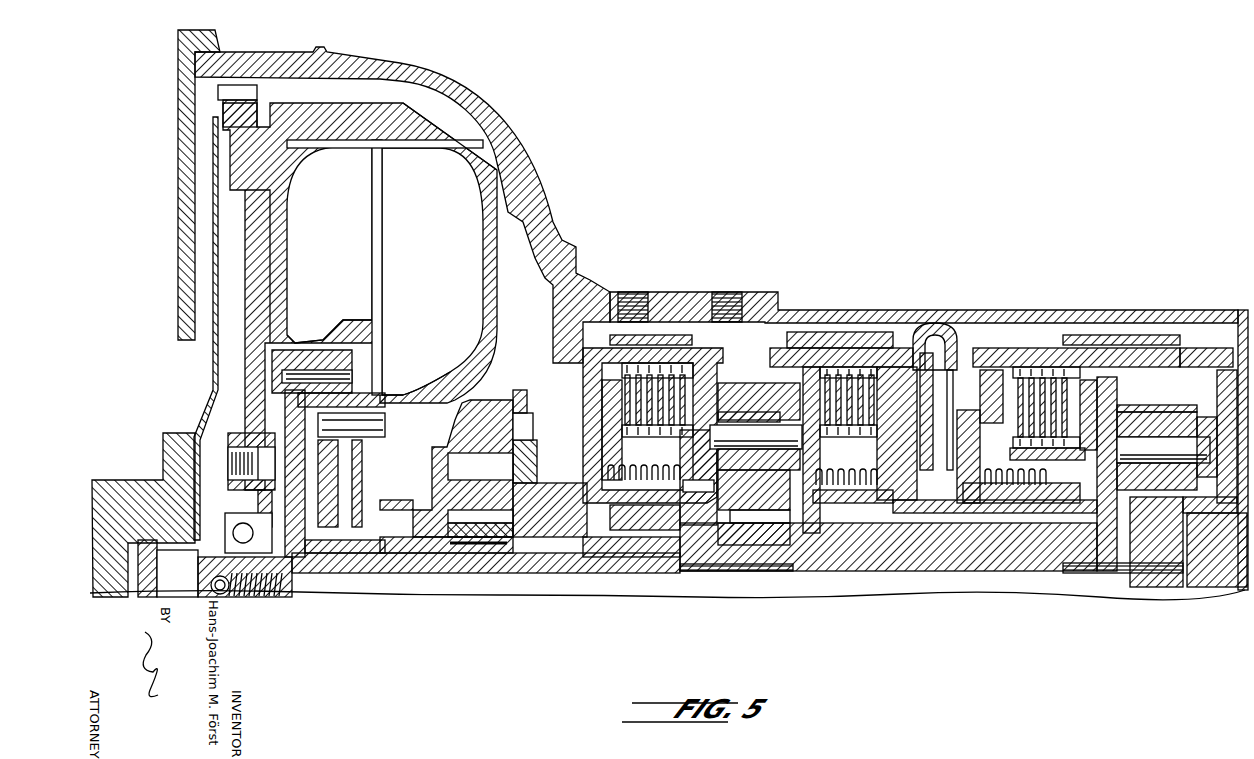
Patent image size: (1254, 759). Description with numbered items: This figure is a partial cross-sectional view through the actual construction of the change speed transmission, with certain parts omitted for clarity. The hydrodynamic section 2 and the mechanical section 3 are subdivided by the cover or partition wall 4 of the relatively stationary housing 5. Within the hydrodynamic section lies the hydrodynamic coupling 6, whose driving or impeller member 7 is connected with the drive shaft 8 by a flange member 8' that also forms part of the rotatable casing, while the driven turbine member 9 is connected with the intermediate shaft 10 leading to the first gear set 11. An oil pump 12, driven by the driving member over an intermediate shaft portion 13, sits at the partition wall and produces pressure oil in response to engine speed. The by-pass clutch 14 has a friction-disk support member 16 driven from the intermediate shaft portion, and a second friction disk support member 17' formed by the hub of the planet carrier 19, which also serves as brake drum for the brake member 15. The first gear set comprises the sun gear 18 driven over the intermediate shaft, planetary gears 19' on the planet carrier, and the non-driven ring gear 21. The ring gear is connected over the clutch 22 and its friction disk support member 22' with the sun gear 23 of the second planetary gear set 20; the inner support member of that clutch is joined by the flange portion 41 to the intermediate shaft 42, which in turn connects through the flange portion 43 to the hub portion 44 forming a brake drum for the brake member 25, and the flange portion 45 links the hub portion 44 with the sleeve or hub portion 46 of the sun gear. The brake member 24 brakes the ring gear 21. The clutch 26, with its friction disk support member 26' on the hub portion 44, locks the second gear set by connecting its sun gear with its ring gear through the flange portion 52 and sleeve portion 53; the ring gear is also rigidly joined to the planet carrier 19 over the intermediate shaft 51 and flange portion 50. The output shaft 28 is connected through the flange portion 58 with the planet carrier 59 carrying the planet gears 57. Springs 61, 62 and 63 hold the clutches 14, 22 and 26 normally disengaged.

The hydrodynamic section 2 is at (272, 85).
The mechanical section 3 is at (793, 310).
The cover or partition wall 4 is at (528, 412).
The housing 5 is at (452, 74).
The hydrodynamic coupling 6 is at (449, 150).
The driving member 7 is at (418, 241).
The drive shaft 8 is at (192, 515).
The flange member 8' is at (360, 330).
The turbine member 9 is at (318, 241).
The intermediate shaft 10 is at (575, 573).
The first gear set 11 is at (735, 523).
The oil pump 12 is at (462, 480).
The intermediate shaft portion 13 is at (520, 553).
The by-pass clutch 14 is at (632, 400).
The brake member 15 is at (690, 340).
The friction-disk support member 16 is at (683, 505).
The friction disk support member 17' is at (697, 291).
The sun gear 18 is at (760, 530).
The planet carrier 19 is at (756, 437).
The planetary gears 19' is at (750, 395).
The second planetary gear set 20 is at (1225, 375).
The ring gear 21 is at (750, 383).
The clutch 22 is at (843, 434).
The friction disk support member 22' is at (935, 376).
The sun gear 23 is at (1168, 550).
The brake member 24 is at (845, 333).
The brake member 25 is at (1115, 335).
The clutch 26 is at (1055, 387).
The friction disk support member 26' is at (1076, 324).
The output shaft 28 is at (1225, 575).
The flange portion 41 is at (811, 540).
The intermediate shaft 42 is at (930, 513).
The flange portion 43 is at (972, 410).
The hub portion 44 is at (1180, 348).
The flange portion 45 is at (1240, 330).
The sleeve or hub portion 46 is at (1210, 515).
The flange portion 50 is at (790, 525).
The intermediate shaft 51 is at (975, 530).
The flange portion 52 is at (1097, 545).
The sleeve or hub portion 53 is at (1160, 412).
The planet gears 57 is at (1206, 411).
The flange portion 58 is at (1128, 575).
The planet carrier 59 is at (1149, 455).
The spring 61 is at (620, 466).
The spring 62 is at (845, 503).
The spring 63 is at (1020, 503).